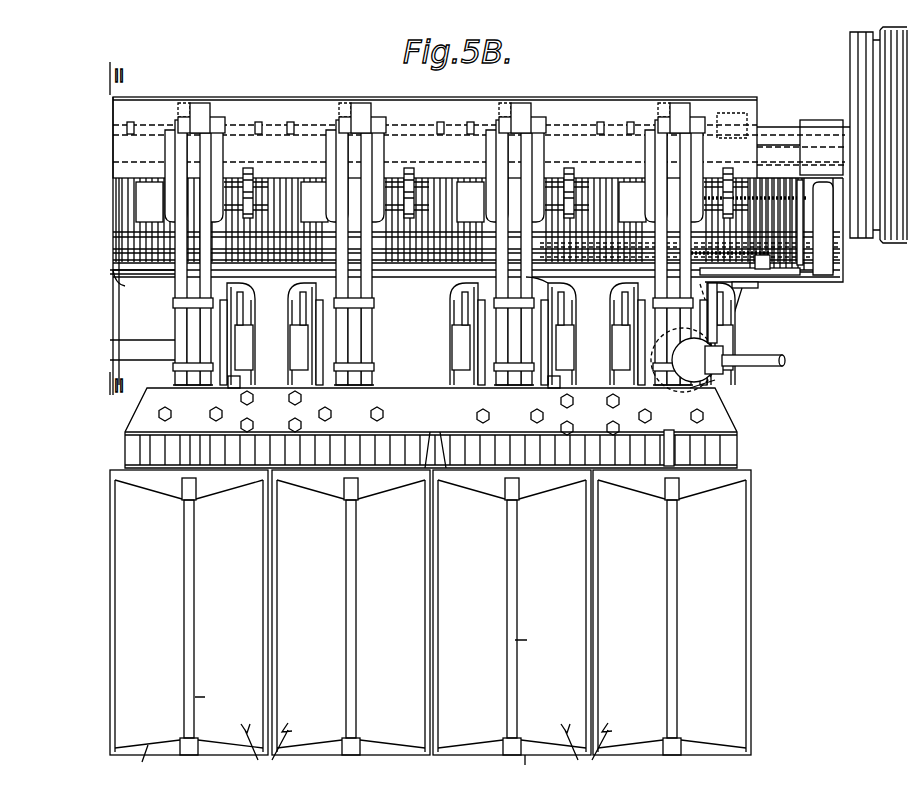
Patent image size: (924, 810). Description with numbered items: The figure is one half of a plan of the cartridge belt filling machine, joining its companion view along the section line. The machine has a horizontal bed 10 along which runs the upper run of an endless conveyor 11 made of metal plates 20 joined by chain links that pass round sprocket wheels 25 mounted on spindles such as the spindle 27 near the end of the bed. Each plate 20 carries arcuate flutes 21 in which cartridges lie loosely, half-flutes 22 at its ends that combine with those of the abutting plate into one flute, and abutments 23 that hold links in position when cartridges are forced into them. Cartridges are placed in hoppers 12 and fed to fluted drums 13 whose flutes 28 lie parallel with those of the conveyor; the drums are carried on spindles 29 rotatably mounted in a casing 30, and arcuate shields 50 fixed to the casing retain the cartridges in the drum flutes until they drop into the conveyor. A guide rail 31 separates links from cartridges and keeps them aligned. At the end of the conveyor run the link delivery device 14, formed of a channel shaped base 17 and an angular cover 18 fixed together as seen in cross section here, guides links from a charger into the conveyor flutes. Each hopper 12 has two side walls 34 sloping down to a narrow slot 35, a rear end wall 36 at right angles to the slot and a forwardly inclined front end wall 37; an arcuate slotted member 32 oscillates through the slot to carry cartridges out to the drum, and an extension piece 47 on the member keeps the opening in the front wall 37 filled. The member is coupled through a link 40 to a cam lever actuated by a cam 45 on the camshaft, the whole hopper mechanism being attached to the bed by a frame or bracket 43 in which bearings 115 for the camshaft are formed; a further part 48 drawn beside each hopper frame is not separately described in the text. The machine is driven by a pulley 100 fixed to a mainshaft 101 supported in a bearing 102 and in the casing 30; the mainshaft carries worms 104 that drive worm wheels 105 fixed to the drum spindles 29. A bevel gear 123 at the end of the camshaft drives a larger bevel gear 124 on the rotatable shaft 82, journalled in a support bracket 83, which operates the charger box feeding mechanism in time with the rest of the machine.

The horizontal bed 10 is at (840, 280).
The endless conveyor 11 is at (478, 268).
The hopper 12 is at (426, 751).
The fluted drum 13 is at (648, 180).
The link delivery device 14 is at (780, 272).
The channel shaped base 17 is at (765, 270).
The angular cover 18 is at (613, 250).
The conveyor plate 20 is at (815, 190).
The arcuate flute 21 is at (165, 222).
The half-flute 22 is at (418, 186).
The abutment 23 is at (420, 262).
The sprocket wheel 25 is at (820, 262).
The spindle 27 is at (745, 290).
The drum flute 28 is at (656, 210).
The drum spindle 29 is at (695, 180).
The casing 30 is at (270, 105).
The guide rail 31 is at (580, 290).
The slotted member 32 is at (372, 668).
The side wall 34 is at (428, 744).
The slot 35 is at (674, 648).
The rear end wall 36 is at (327, 763).
The front end wall 37 is at (432, 440).
The link 40 is at (645, 388).
The frame or bracket 43 is at (586, 403).
The cam 45 is at (240, 322).
The extension piece 47 is at (356, 492).
The bracket 48 is at (508, 322).
The arcuate shield 50 is at (728, 182).
The rotatable shaft 82 is at (772, 356).
The support bracket 83 is at (722, 336).
The pulley 100 is at (857, 78).
The mainshaft 101 is at (780, 142).
The bearing 102 is at (822, 125).
The worm 104 is at (685, 112).
The worm wheel 105 is at (147, 128).
The camshaft bearing 115 is at (564, 385).
The bevel gear 123 is at (718, 389).
The bevel gear 124 is at (704, 312).